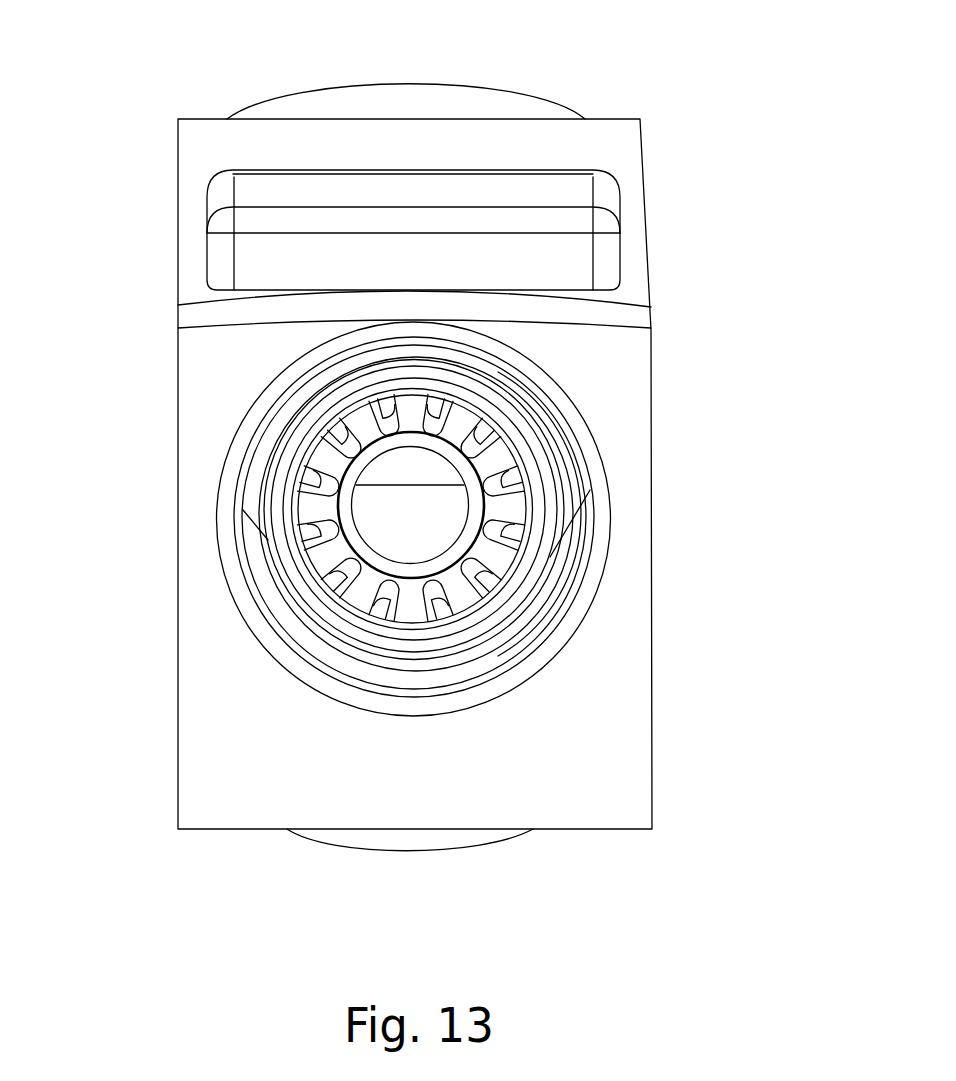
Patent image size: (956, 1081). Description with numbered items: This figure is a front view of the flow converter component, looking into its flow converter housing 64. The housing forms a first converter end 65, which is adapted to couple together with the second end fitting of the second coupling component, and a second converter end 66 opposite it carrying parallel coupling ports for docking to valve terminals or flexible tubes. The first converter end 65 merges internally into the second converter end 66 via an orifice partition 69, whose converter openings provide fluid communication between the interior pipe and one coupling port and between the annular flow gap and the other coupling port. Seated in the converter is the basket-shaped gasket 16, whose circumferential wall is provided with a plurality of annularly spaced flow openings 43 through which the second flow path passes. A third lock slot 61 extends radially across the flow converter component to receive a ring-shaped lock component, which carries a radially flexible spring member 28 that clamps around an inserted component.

The gasket 16 is at (350, 481).
The spring member 28 is at (372, 850).
The flow openings 43 is at (320, 534).
The third lock slot 61 is at (267, 187).
The flow converter housing 64 is at (613, 652).
The first converter end 65 is at (217, 708).
The second converter end 66 is at (560, 97).
The orifice partition 69 is at (427, 467).